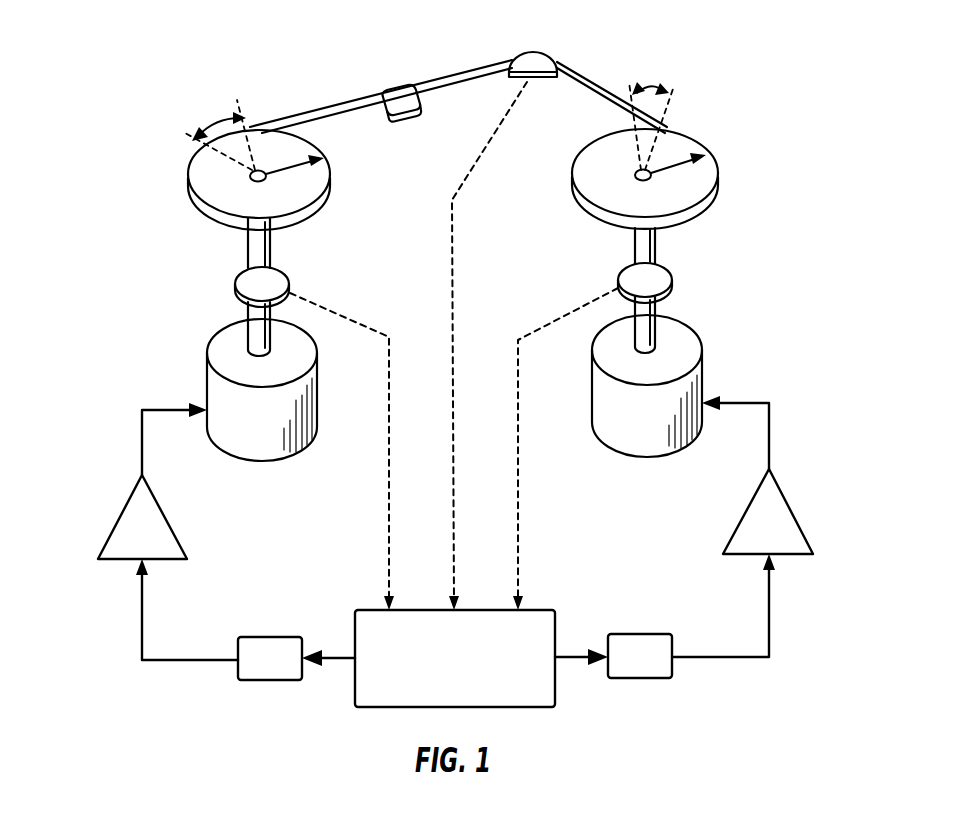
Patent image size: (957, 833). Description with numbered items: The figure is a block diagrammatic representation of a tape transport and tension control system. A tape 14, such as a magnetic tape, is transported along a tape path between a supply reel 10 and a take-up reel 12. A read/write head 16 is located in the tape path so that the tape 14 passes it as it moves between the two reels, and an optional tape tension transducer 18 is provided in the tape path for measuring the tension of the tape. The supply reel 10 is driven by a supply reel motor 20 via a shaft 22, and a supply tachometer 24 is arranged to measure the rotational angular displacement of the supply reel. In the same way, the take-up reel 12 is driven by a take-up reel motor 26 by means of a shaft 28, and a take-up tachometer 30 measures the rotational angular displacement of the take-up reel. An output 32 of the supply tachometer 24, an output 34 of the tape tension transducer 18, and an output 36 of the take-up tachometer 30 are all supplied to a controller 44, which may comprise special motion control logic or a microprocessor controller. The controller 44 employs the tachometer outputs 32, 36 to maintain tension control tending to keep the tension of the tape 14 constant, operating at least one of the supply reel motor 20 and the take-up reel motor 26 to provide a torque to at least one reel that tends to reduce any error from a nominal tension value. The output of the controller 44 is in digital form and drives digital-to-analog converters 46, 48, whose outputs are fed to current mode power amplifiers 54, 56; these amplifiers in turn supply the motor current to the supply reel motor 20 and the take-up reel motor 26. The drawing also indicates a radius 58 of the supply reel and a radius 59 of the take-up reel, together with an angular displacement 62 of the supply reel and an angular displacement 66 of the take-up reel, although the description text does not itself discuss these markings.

The supply reel 10 is at (193, 170).
The take-up reel 12 is at (580, 163).
The tape 14 is at (362, 95).
The read/write head 16 is at (413, 117).
The tape tension transducer 18 is at (535, 51).
The supply reel motor 20 is at (222, 336).
The shaft 22 is at (247, 262).
The supply tachometer 24 is at (238, 282).
The take-up reel motor 26 is at (683, 332).
The shaft 28 is at (658, 251).
The take-up tachometer 30 is at (670, 275).
The output of the supply tachometer 32 is at (386, 512).
The output of the tape tension transducer 34 is at (462, 404).
The output of the take-up tachometer 36 is at (522, 510).
The controller 44 is at (375, 610).
The digital-to-analog converter 46 is at (259, 637).
The digital-to-analog converter 48 is at (653, 634).
The current mode power amplifier 54 is at (115, 515).
The current mode power amplifier 56 is at (795, 511).
The radius of first disk 58 is at (297, 164).
The radius of second disk 59 is at (688, 158).
The rotation angle of first disk 62 is at (218, 121).
The rotation angle of second disk 66 is at (651, 89).